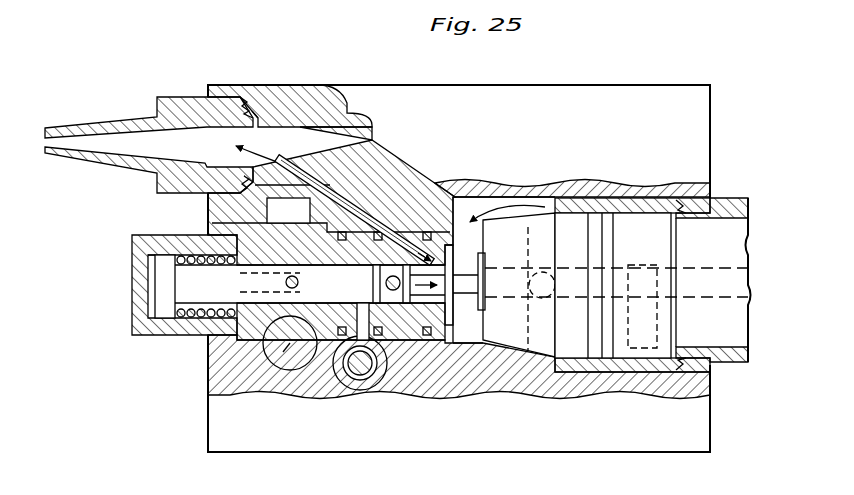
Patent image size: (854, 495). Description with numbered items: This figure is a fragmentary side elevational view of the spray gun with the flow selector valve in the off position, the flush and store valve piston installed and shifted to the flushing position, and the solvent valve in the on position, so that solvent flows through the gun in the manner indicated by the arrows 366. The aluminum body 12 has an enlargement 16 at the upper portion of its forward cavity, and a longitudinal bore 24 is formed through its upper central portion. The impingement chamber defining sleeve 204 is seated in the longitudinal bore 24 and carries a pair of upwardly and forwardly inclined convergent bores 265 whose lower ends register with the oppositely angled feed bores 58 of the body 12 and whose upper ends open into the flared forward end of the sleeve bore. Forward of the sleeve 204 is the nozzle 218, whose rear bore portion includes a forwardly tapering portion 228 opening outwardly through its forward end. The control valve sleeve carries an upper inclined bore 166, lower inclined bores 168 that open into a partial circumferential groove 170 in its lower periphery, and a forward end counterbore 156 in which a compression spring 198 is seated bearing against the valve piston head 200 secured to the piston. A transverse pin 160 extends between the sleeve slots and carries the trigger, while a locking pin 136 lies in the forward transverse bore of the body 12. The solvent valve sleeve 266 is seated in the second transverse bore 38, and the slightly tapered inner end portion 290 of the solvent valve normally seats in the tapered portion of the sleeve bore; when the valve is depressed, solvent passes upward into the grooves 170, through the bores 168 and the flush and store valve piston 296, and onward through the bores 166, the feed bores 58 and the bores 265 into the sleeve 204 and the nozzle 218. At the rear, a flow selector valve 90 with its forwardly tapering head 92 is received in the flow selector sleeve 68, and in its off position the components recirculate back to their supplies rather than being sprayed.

The body 12 is at (640, 437).
The enlargement 16 is at (267, 211).
The longitudinal bore 24 is at (292, 103).
The second transverse bore 38 is at (387, 377).
The feed bore 58 is at (397, 193).
The flow selector sleeve 68 is at (623, 203).
The flow selector valve 90 is at (727, 248).
The forward end head 92 is at (575, 338).
The locking pin 136 is at (280, 352).
The forward end counterbore 156 is at (148, 255).
The transverse pin 160 is at (278, 283).
The upper inclined bore 166 is at (432, 215).
The lower inclined bore 168 is at (365, 315).
The partial circumferential groove 170 is at (352, 312).
The compression spring 198 is at (196, 327).
The valve piston head 200 is at (167, 298).
The impingement chamber defining sleeve 204 is at (307, 123).
The nozzle 218 is at (185, 102).
The forwardly tapering portion 228 is at (122, 148).
The inclined convergent bore 265 is at (350, 153).
The solvent valve sleeve 266 is at (370, 387).
The tapered inner end portion 290 is at (338, 400).
The flush and store valve piston 296 is at (245, 293).
The arrows 366 is at (527, 270).